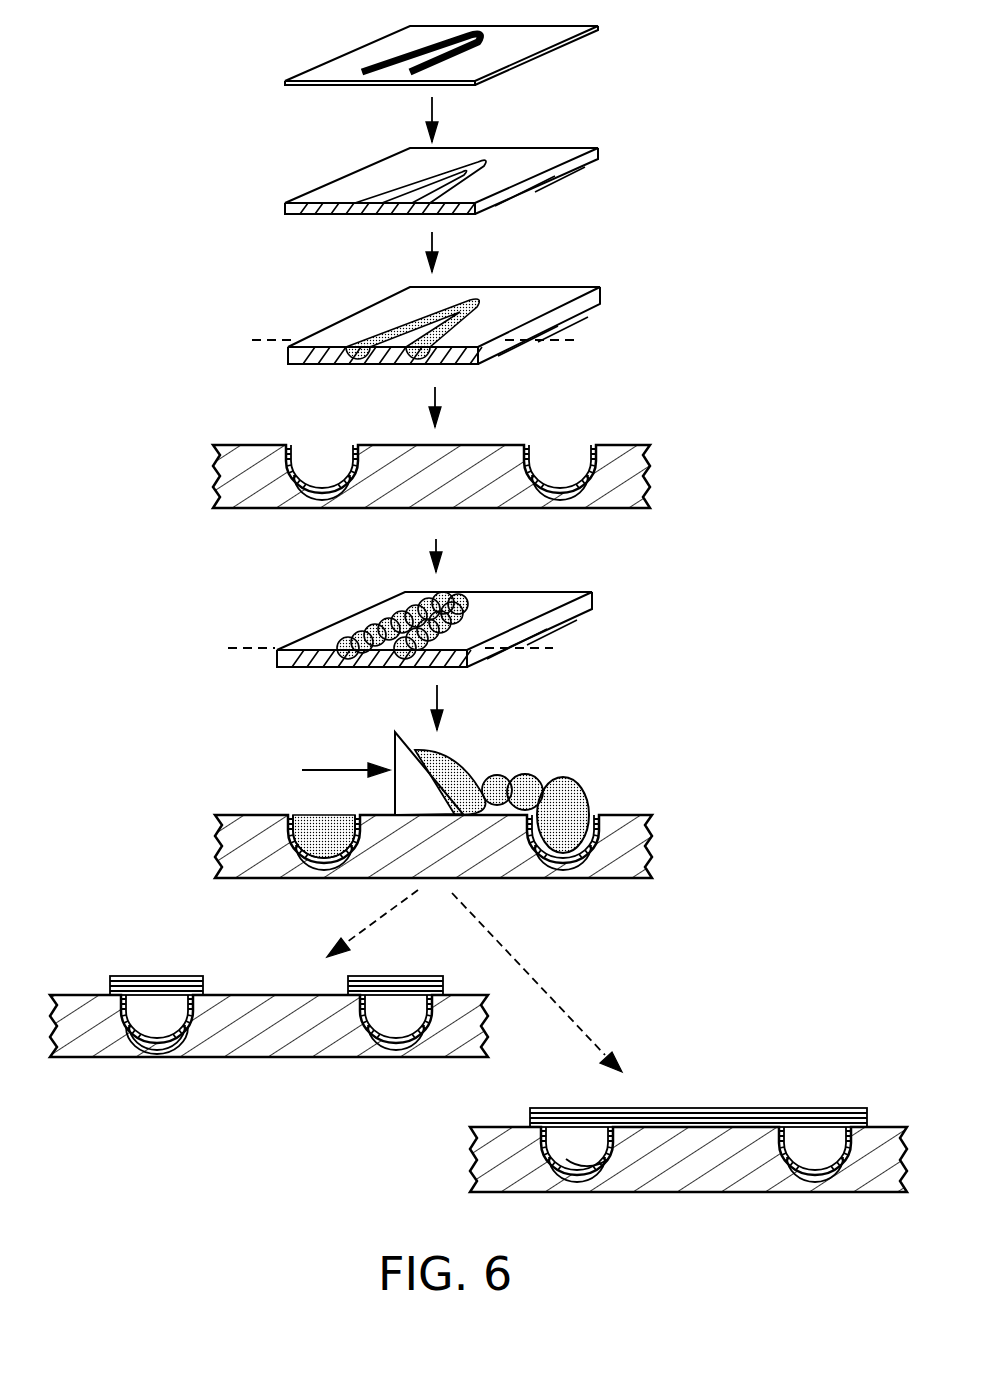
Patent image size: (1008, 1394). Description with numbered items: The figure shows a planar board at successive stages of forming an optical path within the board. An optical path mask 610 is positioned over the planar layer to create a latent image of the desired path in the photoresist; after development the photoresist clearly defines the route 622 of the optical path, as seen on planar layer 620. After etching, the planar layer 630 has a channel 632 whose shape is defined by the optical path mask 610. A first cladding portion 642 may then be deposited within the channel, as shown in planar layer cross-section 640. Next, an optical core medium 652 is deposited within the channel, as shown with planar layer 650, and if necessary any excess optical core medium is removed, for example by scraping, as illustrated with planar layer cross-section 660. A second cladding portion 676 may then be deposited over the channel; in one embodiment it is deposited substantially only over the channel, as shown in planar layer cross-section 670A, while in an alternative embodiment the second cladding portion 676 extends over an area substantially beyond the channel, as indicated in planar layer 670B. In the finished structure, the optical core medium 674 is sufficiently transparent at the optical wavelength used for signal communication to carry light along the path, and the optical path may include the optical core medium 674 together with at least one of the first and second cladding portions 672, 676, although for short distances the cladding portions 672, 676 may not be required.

The optical path mask 610 is at (273, 75).
The planar layer 620 is at (402, 171).
The route 622 is at (382, 195).
The planar layer 630 is at (426, 313).
The channel 632 is at (388, 325).
The planar layer cross-section 640 is at (395, 453).
The first cladding portion 642 is at (340, 478).
The planar layer 650 is at (410, 609).
The optical core medium 652 is at (388, 622).
The planar layer cross-section 660 is at (201, 849).
The planar layer cross-section 670A is at (282, 990).
The planar layer 670B is at (465, 1170).
The first cladding portion 672 is at (177, 1027).
The optical core medium 674 is at (153, 1015).
The second cladding portion 676 is at (110, 988).